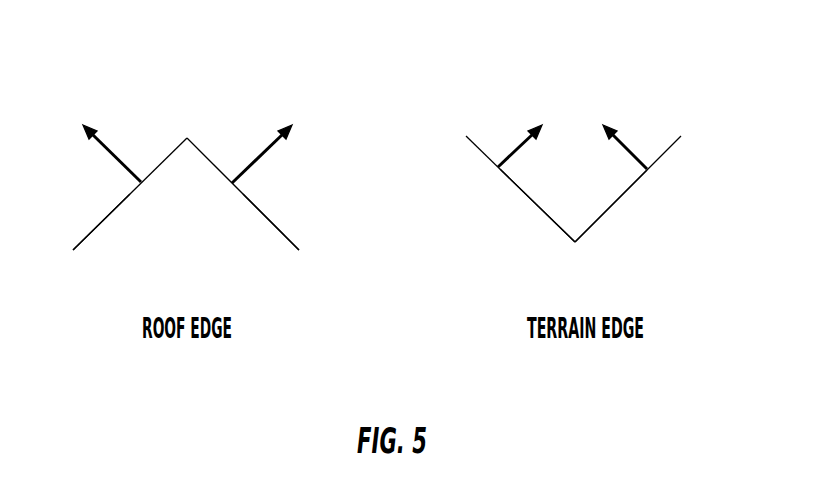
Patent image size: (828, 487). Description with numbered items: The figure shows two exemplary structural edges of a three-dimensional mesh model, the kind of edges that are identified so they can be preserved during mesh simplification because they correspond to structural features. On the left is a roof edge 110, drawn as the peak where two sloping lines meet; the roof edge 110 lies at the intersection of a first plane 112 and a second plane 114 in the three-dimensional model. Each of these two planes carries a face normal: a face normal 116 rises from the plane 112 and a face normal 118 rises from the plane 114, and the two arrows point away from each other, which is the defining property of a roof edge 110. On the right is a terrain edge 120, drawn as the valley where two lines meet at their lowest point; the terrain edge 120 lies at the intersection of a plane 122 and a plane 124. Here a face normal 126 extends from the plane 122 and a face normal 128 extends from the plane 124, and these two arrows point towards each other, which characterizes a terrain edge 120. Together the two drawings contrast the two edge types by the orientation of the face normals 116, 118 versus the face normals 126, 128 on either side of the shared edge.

The roof edge 110 is at (187, 137).
The plane 112 is at (97, 225).
The plane 114 is at (258, 210).
The face normal 116 is at (118, 163).
The face normal 118 is at (250, 158).
The terrain edge 120 is at (575, 243).
The plane 122 is at (520, 192).
The plane 124 is at (625, 192).
The face normal 126 is at (510, 153).
The face normal 128 is at (628, 148).